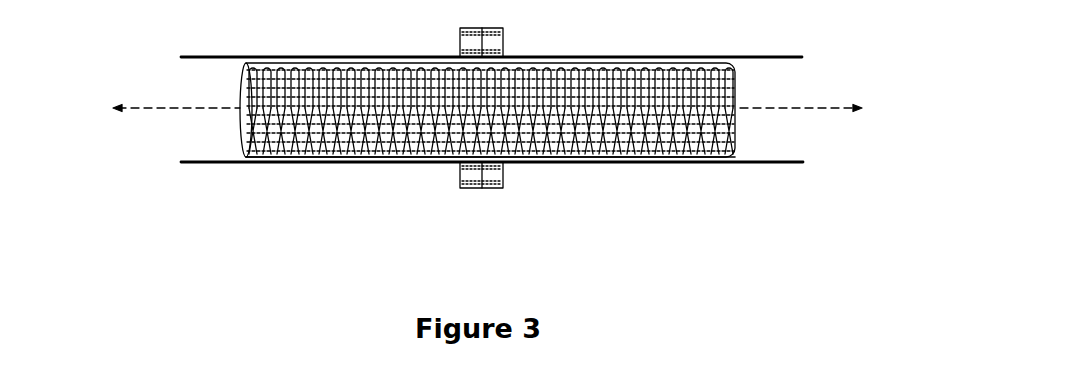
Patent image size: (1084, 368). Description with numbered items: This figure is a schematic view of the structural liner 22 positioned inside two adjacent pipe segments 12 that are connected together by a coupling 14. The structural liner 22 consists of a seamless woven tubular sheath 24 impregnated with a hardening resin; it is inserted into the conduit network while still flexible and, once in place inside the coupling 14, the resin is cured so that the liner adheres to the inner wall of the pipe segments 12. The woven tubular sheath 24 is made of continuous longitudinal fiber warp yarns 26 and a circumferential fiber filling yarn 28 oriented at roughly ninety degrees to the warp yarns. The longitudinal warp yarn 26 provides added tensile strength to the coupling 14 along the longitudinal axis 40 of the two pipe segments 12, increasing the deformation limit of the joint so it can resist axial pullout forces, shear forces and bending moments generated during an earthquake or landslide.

The pipe segment 12 is at (345, 53).
The coupling 14 is at (503, 189).
The structural liner 22 is at (492, 85).
The seamless woven tubular sheath 24 is at (377, 159).
The longitudinal fiber warp yarn 26 is at (740, 151).
The circumferential fiber filling yarn 28 is at (567, 63).
The longitudinal axis 40 is at (185, 107).